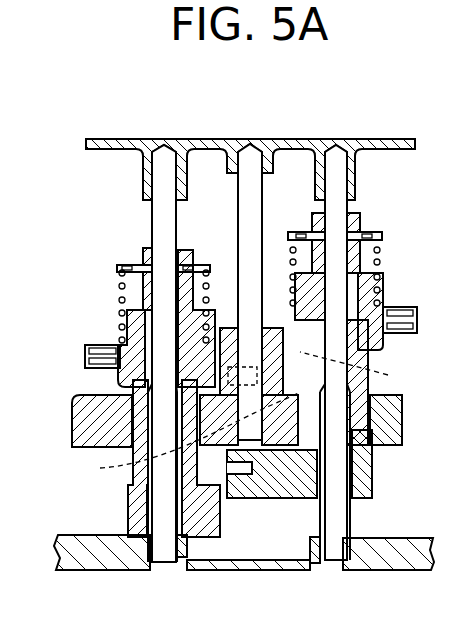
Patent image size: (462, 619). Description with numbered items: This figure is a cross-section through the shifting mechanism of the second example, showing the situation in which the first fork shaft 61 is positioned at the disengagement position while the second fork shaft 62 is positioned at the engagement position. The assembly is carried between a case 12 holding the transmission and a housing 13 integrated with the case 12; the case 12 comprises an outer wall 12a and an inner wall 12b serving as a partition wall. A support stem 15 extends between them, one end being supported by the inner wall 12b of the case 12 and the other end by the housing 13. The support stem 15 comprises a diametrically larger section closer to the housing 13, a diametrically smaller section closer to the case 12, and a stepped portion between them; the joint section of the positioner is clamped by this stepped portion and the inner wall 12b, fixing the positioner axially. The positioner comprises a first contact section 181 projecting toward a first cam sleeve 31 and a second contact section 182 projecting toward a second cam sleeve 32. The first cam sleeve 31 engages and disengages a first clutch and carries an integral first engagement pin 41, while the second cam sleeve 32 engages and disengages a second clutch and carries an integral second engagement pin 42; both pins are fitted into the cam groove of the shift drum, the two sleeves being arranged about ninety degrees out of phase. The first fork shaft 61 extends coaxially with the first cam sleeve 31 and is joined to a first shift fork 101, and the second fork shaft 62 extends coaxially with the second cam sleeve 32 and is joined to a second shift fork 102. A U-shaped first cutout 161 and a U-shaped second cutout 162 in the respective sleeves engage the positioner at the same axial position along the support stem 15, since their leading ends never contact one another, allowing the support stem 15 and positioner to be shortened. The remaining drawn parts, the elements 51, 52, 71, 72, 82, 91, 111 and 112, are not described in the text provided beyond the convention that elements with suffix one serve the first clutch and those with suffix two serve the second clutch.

The case 12 is at (62, 556).
The outer wall 12a is at (110, 562).
The inner wall 12b is at (82, 427).
The housing 13 is at (108, 141).
The support stem 15 is at (250, 163).
The first cam sleeve 31 is at (117, 376).
The second cam sleeve 32 is at (377, 340).
The first engagement pin 41 is at (97, 346).
The second engagement pin 42 is at (417, 315).
The first seal 51 is at (97, 342).
The second seal 52 is at (397, 307).
The first fork shaft 61 is at (137, 508).
The second fork shaft 62 is at (367, 473).
The first flange 71 is at (133, 268).
The second flange 72 is at (370, 232).
The second spring 82 is at (383, 250).
The first spring 91 is at (118, 288).
The first shift fork 101 is at (281, 492).
The second shift fork 102 is at (200, 528).
The first shaft 111 is at (163, 157).
The second shaft 112 is at (332, 160).
The first cutout 161 is at (177, 393).
The second cutout 162 is at (363, 359).
The first contact section 181 is at (240, 316).
The second contact section 182 is at (290, 383).